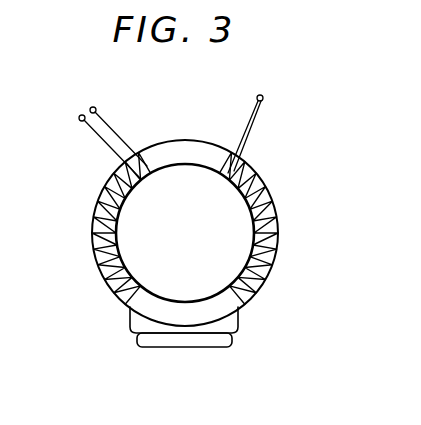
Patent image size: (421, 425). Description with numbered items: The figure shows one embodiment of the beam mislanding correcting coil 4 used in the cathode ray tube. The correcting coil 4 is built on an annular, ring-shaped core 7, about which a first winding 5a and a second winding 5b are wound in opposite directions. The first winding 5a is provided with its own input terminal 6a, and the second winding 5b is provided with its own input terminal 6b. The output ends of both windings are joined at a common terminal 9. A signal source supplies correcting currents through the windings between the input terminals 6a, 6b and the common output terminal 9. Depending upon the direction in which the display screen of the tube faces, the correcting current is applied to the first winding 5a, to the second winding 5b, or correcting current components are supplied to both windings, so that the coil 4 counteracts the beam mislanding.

The correcting coil 4 is at (190, 255).
The annular core 7 is at (184, 159).
The input terminal 6a is at (96, 110).
The input terminal 6b is at (80, 121).
The common terminal 9 is at (257, 96).
The first winding 5a is at (143, 348).
The second winding 5b is at (136, 331).